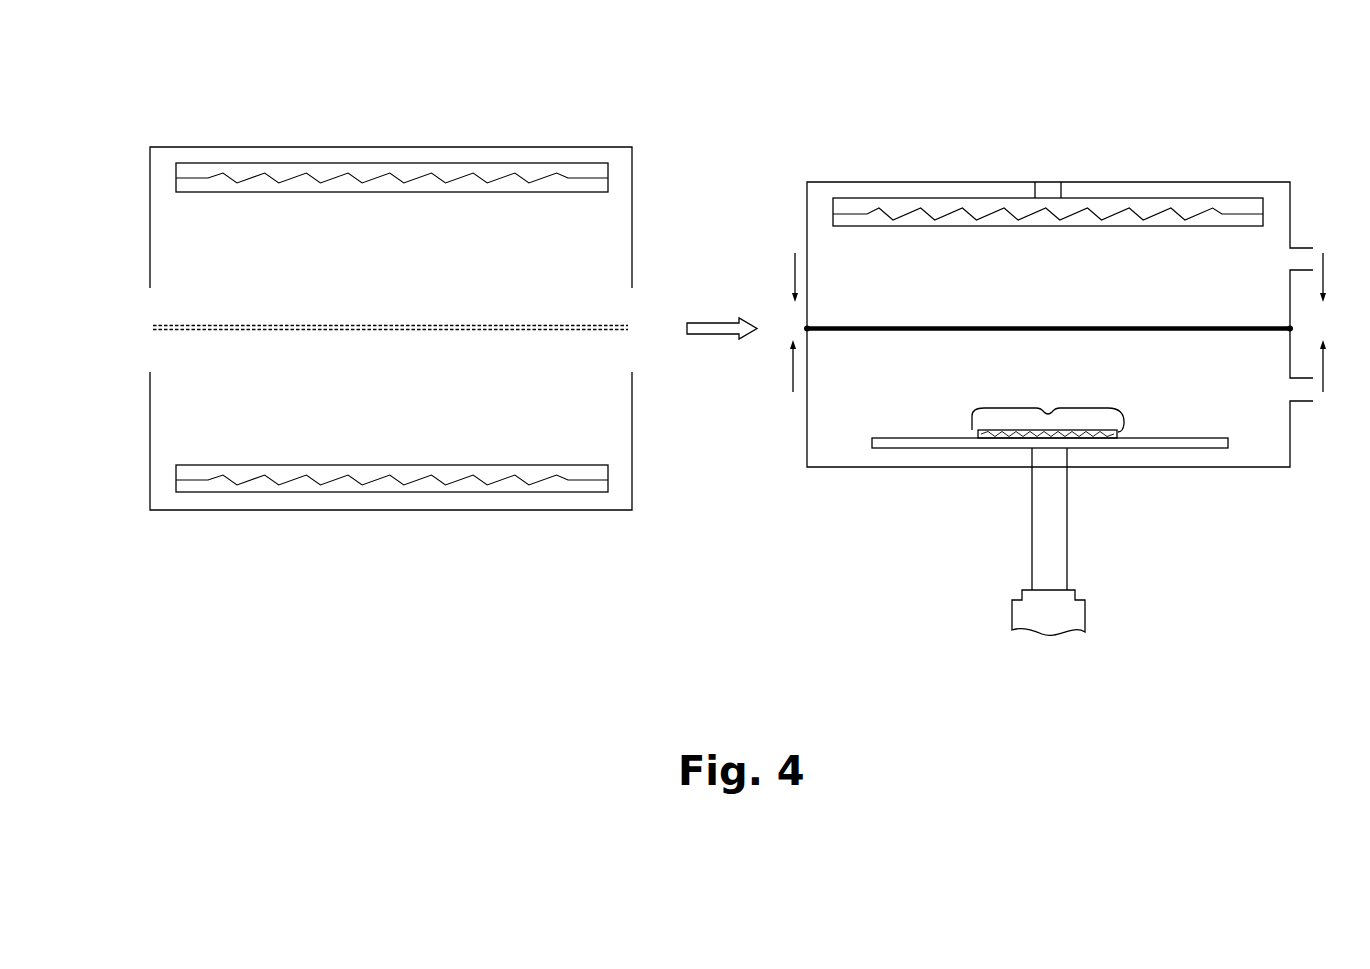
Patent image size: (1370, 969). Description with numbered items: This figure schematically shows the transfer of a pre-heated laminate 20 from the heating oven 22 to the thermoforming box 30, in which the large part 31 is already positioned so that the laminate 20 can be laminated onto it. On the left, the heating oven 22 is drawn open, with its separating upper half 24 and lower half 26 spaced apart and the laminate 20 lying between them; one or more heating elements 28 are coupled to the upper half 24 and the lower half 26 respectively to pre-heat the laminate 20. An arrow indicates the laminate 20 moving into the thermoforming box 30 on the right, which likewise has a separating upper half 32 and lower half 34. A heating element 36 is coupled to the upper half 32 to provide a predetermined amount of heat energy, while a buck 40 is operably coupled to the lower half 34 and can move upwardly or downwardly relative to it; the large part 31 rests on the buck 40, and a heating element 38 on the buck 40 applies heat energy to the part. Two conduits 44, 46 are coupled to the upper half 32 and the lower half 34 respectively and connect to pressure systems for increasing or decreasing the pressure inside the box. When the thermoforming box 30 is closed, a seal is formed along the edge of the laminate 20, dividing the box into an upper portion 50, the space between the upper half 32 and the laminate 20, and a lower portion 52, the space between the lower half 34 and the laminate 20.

The laminate 20 is at (590, 331).
The heating oven 22 is at (492, 136).
The upper half 24 is at (244, 147).
The lower half 26 is at (343, 510).
The heating elements 28 is at (396, 163).
The thermoforming box 30 is at (1020, 174).
The large part 31 is at (980, 422).
The upper half 32 is at (1148, 182).
The lower half 34 is at (1247, 467).
The heating element 36 is at (1205, 198).
The heating element 38 is at (1010, 436).
The buck 40 is at (1097, 455).
The conduit 44 is at (1302, 248).
The conduit 46 is at (1303, 401).
The upper portion 50 is at (898, 291).
The lower portion 52 is at (898, 387).